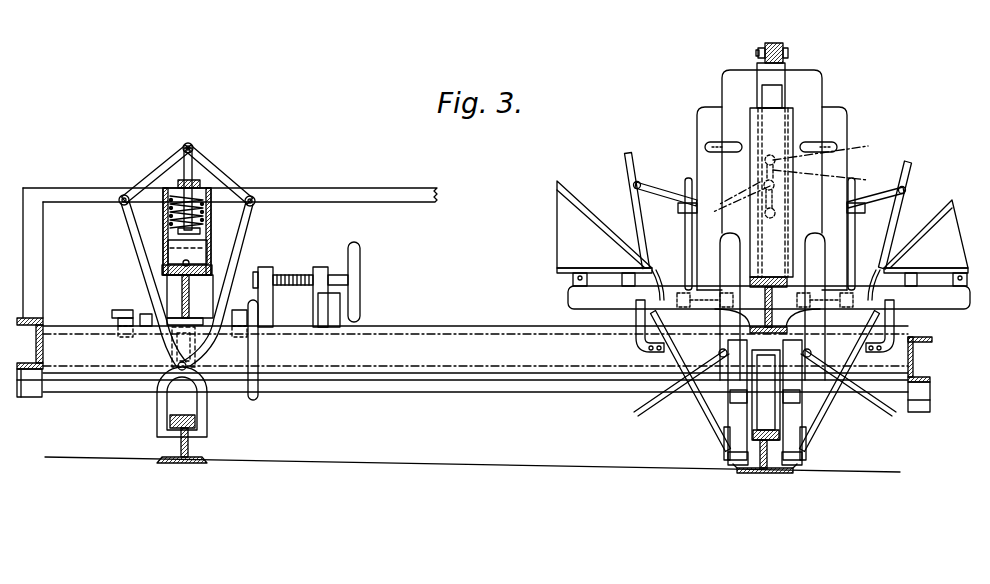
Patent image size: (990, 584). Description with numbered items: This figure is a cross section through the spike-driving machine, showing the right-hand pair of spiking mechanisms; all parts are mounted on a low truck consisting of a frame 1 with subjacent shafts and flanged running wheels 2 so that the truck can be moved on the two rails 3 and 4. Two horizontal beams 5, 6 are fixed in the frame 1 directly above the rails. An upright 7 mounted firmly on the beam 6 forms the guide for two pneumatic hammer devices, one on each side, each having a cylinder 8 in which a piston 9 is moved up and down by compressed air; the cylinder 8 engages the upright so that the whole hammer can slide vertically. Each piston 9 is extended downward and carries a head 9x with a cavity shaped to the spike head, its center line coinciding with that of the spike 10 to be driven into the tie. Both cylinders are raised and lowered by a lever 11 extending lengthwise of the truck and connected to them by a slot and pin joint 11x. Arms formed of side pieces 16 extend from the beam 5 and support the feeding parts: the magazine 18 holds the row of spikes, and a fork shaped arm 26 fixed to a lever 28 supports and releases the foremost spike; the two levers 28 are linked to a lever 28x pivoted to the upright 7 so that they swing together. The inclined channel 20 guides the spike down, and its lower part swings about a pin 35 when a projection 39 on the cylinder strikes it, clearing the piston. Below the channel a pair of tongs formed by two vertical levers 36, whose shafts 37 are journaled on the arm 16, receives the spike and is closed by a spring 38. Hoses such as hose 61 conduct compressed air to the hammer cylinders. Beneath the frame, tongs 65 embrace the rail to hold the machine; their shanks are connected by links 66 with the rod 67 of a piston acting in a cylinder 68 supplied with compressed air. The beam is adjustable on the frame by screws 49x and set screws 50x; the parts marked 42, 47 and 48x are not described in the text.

The frame 1 is at (36, 330).
The running wheels 2 is at (766, 395).
The rail 3 is at (764, 474).
The rail 4 is at (188, 440).
The horizontal beam 5 is at (767, 310).
The horizontal beam 6 is at (189, 297).
The upright 7 is at (780, 120).
The cylinder 8 is at (718, 87).
The piston 9 is at (740, 265).
The head 9x is at (852, 428).
The spike 10 is at (736, 470).
The lever 11 is at (781, 45).
The slot and pin joint 11x is at (757, 52).
The arm 16 is at (604, 304).
The magazine 18 is at (762, 233).
The channel 20 is at (724, 438).
The fork shaped arm 26 is at (666, 282).
The lever 28 is at (646, 210).
The lever 28x is at (860, 148).
The pin 35 is at (660, 356).
The vertical levers 36 is at (685, 241).
The shafts 37 is at (698, 310).
The spring 38 is at (660, 410).
The projection 39 is at (688, 380).
The brackets 42 is at (692, 214).
The rod 47 is at (258, 343).
The bracket 48x is at (163, 298).
The screw 49x is at (282, 306).
The set screw 50x is at (298, 275).
The hose 61 is at (712, 146).
The tongs 65 is at (157, 410).
The links 66 is at (160, 170).
The rod 67 is at (168, 240).
The cylinder 68 is at (208, 228).